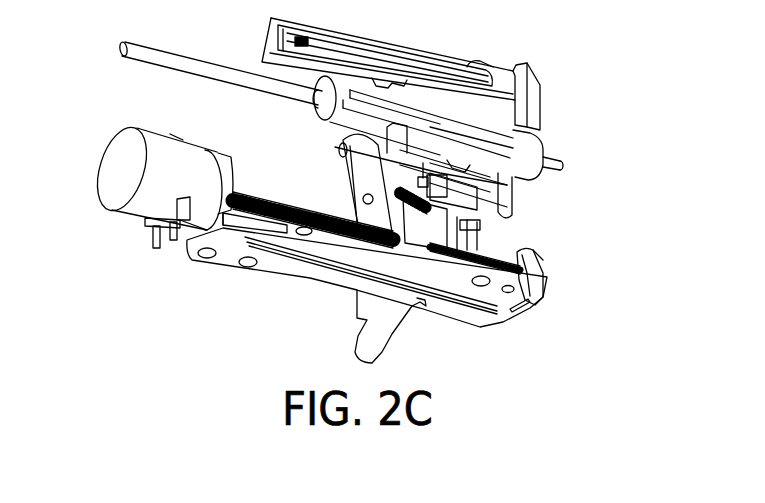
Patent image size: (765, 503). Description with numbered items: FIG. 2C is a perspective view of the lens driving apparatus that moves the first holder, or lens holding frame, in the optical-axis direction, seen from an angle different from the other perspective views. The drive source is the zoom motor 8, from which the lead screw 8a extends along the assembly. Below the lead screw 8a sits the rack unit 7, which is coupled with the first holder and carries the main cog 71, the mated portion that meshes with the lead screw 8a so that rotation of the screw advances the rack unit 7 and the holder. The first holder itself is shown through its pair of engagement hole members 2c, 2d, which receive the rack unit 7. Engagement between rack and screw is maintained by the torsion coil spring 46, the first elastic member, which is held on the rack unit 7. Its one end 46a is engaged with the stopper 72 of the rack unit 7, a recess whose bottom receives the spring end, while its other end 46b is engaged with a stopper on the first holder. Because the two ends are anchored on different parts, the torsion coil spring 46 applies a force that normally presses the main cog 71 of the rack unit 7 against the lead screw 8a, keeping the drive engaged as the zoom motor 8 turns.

The zoom motor 8 is at (114, 188).
The lead screw 8a is at (257, 193).
The engagement hole member 2c is at (358, 186).
The other end of the torsion coil spring 46b is at (448, 170).
The torsion coil spring 46 is at (558, 160).
The engagement hole member 2d is at (510, 210).
The stopper 72 is at (462, 229).
The one end of the torsion coil spring 46a is at (543, 303).
The rack unit 7 is at (390, 216).
The main cog 71 is at (417, 230).